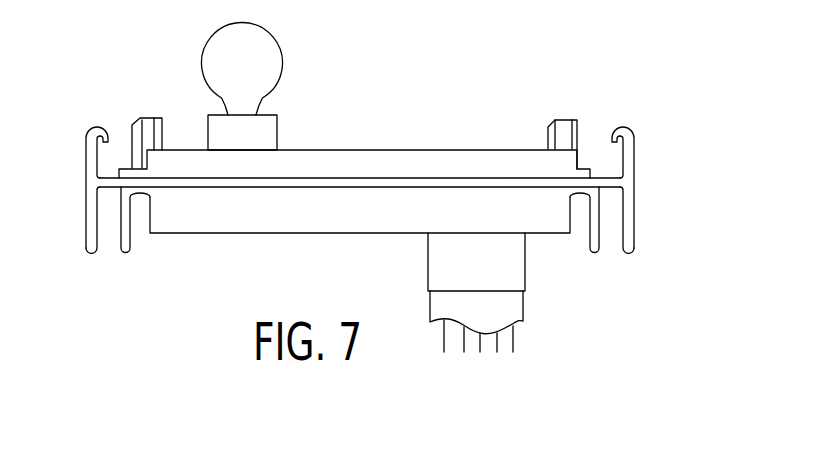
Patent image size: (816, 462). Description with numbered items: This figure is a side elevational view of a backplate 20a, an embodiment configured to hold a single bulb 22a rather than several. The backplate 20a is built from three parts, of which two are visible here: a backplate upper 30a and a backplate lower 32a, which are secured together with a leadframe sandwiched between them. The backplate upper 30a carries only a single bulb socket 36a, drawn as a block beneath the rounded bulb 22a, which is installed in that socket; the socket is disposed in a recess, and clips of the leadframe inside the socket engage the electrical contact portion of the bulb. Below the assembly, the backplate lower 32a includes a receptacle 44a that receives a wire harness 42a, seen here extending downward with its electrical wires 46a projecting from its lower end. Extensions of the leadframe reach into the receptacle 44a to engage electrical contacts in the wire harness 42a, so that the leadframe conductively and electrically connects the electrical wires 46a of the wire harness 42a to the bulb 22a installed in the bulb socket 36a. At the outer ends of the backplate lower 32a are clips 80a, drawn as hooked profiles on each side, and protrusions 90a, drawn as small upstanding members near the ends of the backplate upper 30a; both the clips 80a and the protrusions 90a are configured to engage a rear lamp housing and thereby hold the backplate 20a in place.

The backplate 20a is at (464, 70).
The bulb 22a is at (265, 50).
The backplate upper 30a is at (380, 160).
The backplate lower 32a is at (371, 224).
The bulb socket 36a is at (284, 127).
The wire harness 42a is at (518, 317).
The receptacle 44a is at (518, 274).
The electrical wires 46a is at (525, 358).
The clips 80a is at (78, 195).
The protrusions 90a is at (160, 121).